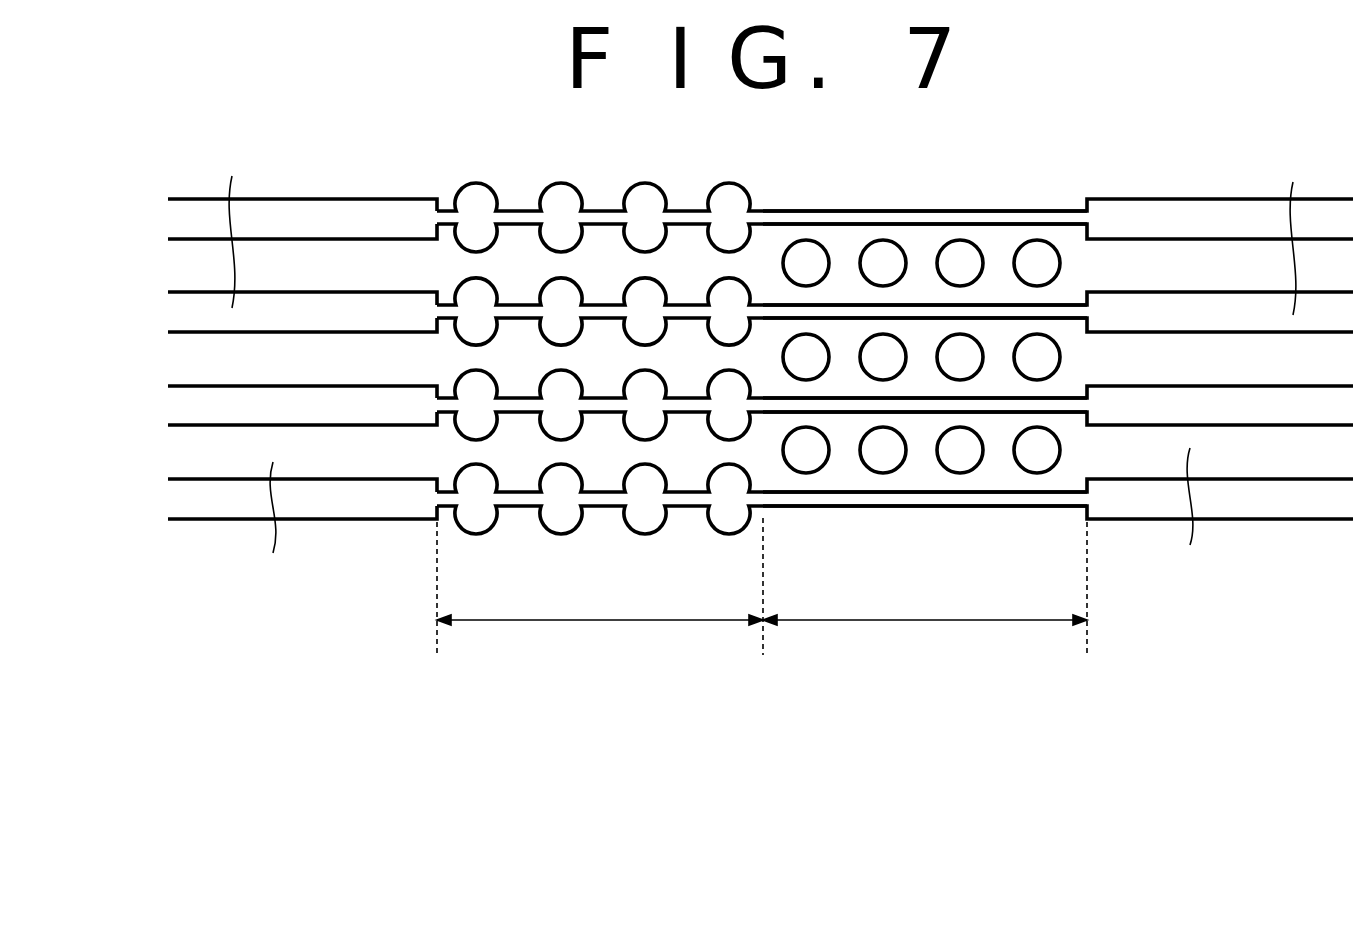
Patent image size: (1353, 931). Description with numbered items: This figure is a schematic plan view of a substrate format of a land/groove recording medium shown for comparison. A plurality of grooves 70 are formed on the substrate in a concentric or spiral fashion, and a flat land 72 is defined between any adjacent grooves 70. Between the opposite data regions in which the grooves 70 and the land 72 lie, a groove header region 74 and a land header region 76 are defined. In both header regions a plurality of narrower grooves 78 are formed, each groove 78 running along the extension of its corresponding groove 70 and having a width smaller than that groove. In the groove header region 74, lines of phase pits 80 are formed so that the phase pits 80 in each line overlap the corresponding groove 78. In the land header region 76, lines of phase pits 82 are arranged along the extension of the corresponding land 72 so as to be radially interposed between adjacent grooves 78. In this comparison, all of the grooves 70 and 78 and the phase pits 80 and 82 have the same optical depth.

The groove 70 is at (1212, 183).
The land 72 is at (762, 381).
The groove header region 74 is at (593, 621).
The land header region 76 is at (923, 621).
The groove 78 is at (881, 216).
The phase pit 80 is at (477, 206).
The phase pit 82 is at (804, 252).